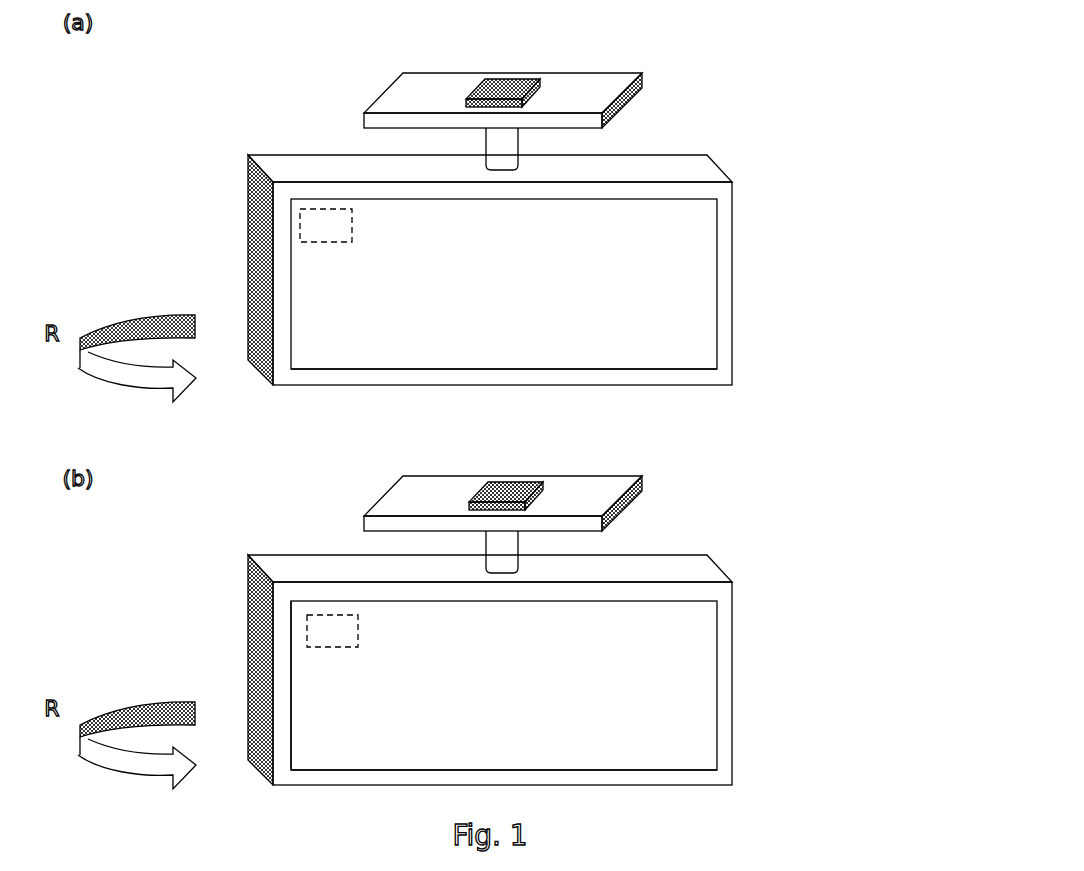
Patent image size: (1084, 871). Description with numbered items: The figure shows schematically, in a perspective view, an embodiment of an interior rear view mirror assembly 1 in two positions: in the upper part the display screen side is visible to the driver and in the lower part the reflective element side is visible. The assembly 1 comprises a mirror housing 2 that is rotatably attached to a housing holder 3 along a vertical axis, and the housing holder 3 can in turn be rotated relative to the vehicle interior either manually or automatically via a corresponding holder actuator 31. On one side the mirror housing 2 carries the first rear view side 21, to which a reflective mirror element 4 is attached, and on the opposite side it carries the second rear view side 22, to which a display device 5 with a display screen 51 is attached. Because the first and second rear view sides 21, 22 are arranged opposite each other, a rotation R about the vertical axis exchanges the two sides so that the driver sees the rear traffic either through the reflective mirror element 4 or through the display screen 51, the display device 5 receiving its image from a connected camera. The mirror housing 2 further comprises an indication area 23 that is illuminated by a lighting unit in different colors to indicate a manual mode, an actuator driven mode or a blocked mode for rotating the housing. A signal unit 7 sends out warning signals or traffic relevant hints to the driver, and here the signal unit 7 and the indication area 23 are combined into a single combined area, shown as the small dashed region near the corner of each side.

The interior rear view mirror assembly 1 is at (520, 416).
The mirror housing 2 is at (690, 166).
The housing holder 3 is at (387, 58).
The holder actuator 31 is at (460, 90).
The reflective mirror element 4 is at (481, 292).
The display device 5 is at (285, 685).
The display screen 51 is at (476, 694).
The signal unit 7 is at (318, 223).
The first rear view side 21 is at (740, 282).
The second rear view side 22 is at (742, 685).
The indication area 23 is at (640, 375).